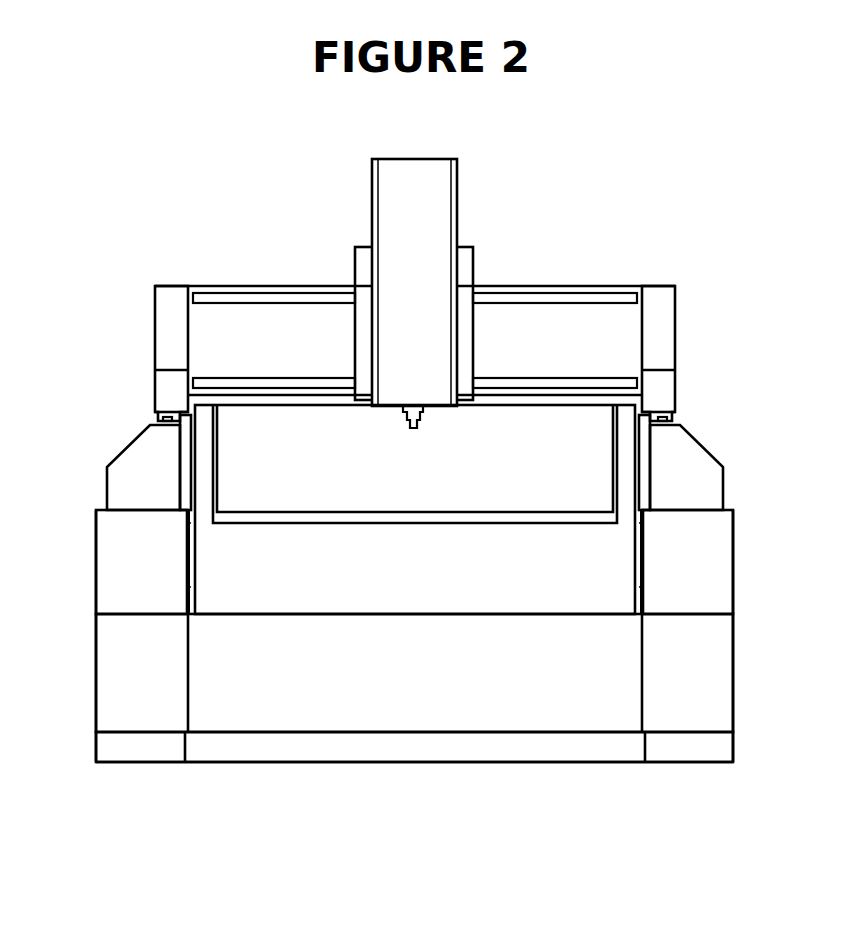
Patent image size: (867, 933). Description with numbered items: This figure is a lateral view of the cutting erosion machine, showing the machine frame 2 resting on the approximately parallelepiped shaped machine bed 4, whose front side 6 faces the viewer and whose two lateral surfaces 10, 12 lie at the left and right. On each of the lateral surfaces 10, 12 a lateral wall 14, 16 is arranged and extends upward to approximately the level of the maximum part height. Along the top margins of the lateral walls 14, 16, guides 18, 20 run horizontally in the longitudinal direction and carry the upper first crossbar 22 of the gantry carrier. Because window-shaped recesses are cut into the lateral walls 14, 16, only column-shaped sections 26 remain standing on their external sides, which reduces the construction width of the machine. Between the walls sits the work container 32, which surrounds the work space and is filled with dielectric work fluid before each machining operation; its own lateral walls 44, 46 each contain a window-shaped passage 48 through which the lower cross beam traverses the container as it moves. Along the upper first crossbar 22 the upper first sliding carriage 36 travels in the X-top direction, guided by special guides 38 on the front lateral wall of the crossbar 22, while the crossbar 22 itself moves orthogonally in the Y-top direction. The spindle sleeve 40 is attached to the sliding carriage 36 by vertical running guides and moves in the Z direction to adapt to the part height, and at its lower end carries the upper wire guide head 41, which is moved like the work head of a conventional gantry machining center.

The machine frame 2 is at (331, 766).
The machine bed 4 is at (455, 750).
The front side 6 is at (414, 673).
The lateral surface 10 is at (96, 662).
The lateral surface 12 is at (733, 677).
The lateral wall 14 is at (143, 467).
The lateral wall 16 is at (686, 467).
The guide 18 is at (157, 422).
The guide 20 is at (670, 425).
The upper first crossbar 22 is at (415, 353).
The column-shaped section 26 is at (414, 562).
The work container 32 is at (415, 509).
The upper first sliding carriage 36 is at (465, 258).
The guides 38 is at (258, 380).
The spindle sleeve 40 is at (414, 282).
The upper wire guide head 41 is at (415, 428).
The lateral wall 44 is at (202, 422).
The lateral wall 46 is at (628, 425).
The window-shaped passage 48 is at (324, 469).